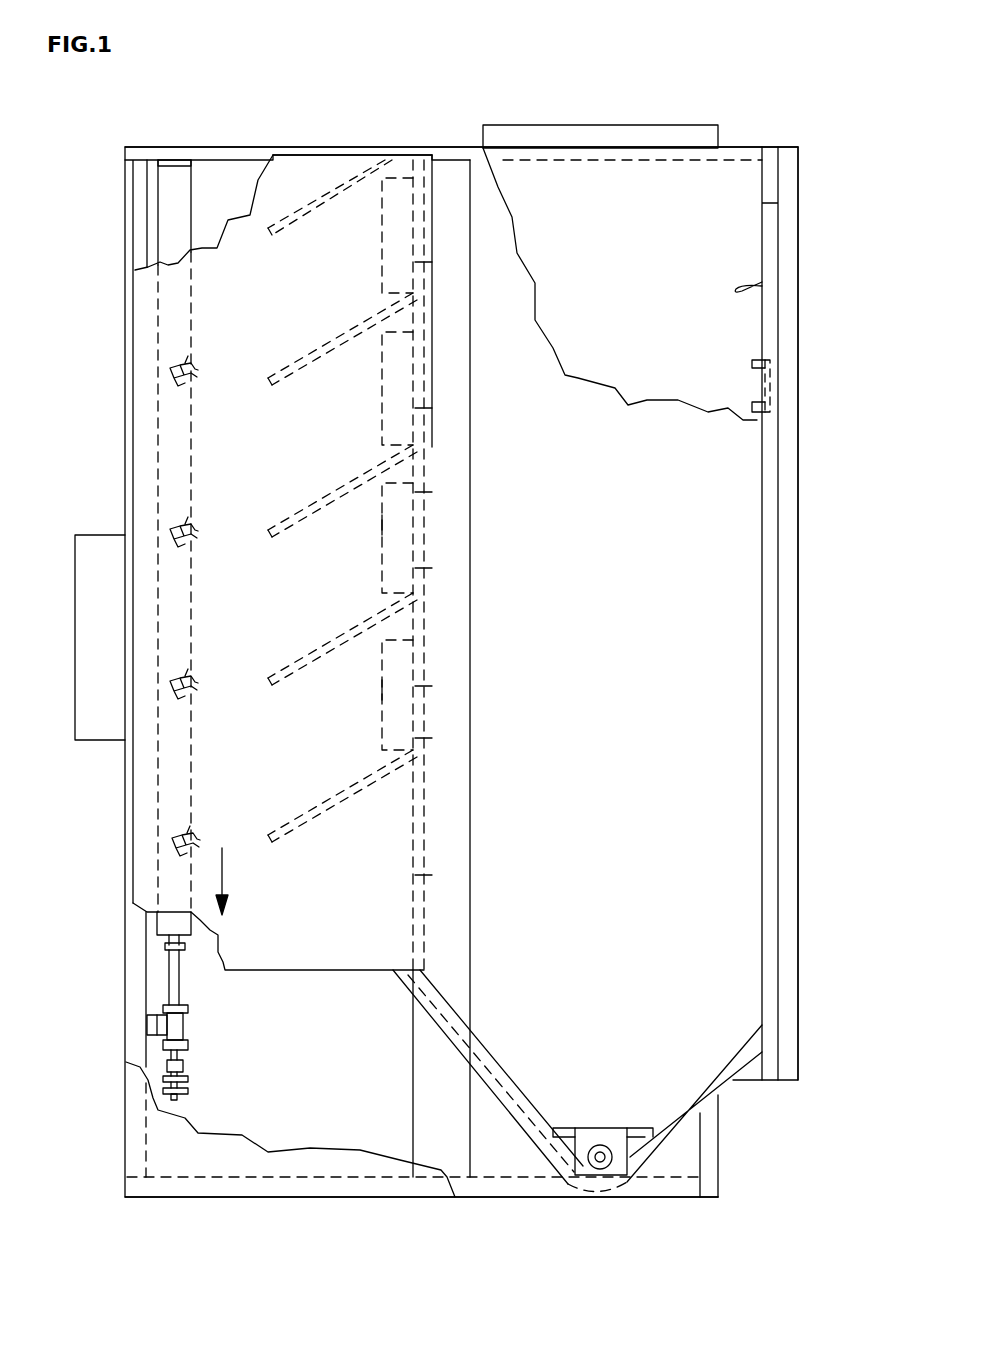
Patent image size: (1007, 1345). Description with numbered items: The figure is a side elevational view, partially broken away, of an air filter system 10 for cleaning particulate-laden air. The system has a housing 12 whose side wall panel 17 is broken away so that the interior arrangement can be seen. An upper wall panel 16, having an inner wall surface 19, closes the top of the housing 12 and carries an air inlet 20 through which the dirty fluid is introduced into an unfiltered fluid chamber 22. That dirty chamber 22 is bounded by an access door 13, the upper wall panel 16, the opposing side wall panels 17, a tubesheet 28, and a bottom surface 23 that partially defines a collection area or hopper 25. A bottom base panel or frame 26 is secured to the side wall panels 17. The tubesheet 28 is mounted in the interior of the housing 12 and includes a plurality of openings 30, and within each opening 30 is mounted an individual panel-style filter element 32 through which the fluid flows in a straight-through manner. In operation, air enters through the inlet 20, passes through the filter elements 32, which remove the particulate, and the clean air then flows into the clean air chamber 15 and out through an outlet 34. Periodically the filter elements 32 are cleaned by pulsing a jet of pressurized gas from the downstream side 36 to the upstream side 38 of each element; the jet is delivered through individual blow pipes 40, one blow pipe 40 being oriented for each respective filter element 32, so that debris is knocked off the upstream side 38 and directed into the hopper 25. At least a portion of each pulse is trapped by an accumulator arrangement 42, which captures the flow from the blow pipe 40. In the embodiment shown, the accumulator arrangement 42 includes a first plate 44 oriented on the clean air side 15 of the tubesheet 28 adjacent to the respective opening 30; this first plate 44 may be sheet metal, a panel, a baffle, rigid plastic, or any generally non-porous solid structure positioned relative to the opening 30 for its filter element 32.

The air filter system 10 is at (823, 110).
The housing 12 is at (125, 998).
The access door 13 is at (802, 895).
The clean air chamber 15 is at (212, 452).
The upper wall panel 16 is at (747, 147).
The side wall panel 17 is at (175, 1128).
The inner wall surface 19 is at (320, 160).
The air inlet 20 is at (683, 125).
The unfiltered fluid chamber 22 is at (768, 289).
The bottom surface 23 is at (480, 1040).
The hopper 25 is at (720, 1120).
The bottom base panel 26 is at (463, 1197).
The tubesheet 28 is at (415, 602).
The opening 30 is at (425, 262).
The panel-style filter element 32 is at (385, 258).
The outlet 34 is at (97, 657).
The downstream side 36 is at (380, 525).
The upstream side 38 is at (420, 492).
The blow pipe 40 is at (173, 372).
The accumulator arrangement 42 is at (220, 868).
The first plate 44 is at (288, 215).